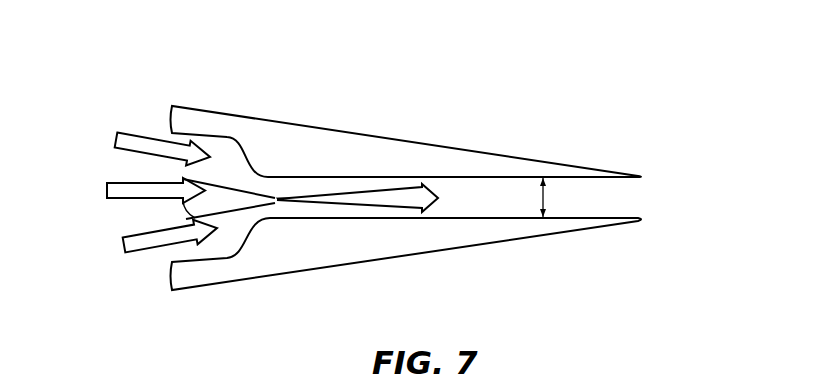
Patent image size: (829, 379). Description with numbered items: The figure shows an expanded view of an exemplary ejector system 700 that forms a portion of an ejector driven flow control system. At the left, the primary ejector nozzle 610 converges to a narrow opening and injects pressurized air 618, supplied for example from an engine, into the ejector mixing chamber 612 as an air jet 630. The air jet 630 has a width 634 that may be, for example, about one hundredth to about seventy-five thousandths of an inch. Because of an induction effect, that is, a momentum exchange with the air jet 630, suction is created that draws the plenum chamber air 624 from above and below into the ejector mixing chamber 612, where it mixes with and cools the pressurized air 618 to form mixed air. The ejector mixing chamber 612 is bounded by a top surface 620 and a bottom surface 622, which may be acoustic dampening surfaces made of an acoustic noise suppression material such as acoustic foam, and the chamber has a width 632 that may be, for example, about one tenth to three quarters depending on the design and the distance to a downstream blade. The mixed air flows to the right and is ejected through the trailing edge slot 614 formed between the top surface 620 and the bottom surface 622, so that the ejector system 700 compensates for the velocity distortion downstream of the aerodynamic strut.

The ejector system 700 is at (179, 53).
The plenum chamber air 624 is at (116, 135).
The pressurized air 618 is at (107, 187).
The primary ejector nozzle 610 is at (200, 208).
The ejector mixing chamber 612 is at (640, 137).
The top surface 620 is at (372, 176).
The bottom surface 622 is at (485, 219).
The width of the ejector mixing chamber 632 is at (548, 200).
The trailing edge slot 614 is at (650, 200).
The width of the air jet 634 is at (283, 168).
The air jet 630 is at (330, 200).